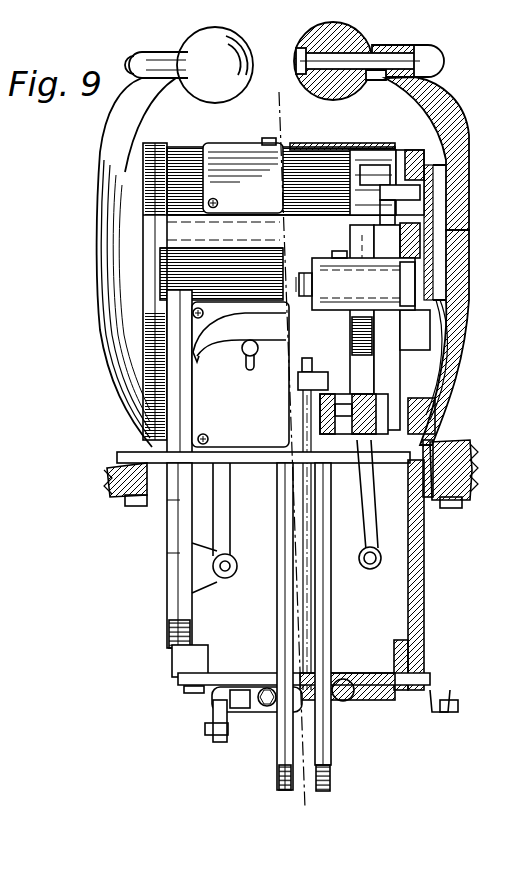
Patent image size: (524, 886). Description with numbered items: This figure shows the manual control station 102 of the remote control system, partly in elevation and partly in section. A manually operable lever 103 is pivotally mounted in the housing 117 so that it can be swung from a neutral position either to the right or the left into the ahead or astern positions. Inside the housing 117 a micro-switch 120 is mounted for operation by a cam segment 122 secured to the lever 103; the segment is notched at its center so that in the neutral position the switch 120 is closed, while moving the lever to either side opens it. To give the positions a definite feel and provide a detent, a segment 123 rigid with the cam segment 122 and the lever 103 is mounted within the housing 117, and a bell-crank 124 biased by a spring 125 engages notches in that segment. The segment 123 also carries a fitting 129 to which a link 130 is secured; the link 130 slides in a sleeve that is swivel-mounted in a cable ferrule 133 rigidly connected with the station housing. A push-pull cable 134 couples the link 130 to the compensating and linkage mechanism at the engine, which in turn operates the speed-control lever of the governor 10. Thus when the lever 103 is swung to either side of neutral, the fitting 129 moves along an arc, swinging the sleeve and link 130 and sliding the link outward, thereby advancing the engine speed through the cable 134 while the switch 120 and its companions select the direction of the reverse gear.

The governor 10 is at (274, 114).
The control station 102 is at (462, 98).
The manually operable lever 103 is at (433, 97).
The housing 117 is at (379, 146).
The micro-switch 120 is at (388, 160).
The cam segment 122 is at (390, 246).
The segment 123 is at (350, 334).
The bell-crank 124 is at (362, 505).
The spring 125 is at (371, 570).
The fitting 129 is at (298, 383).
The link 130 is at (308, 424).
The cable ferrule 133 is at (328, 744).
The push-pull cable 134 is at (333, 773).